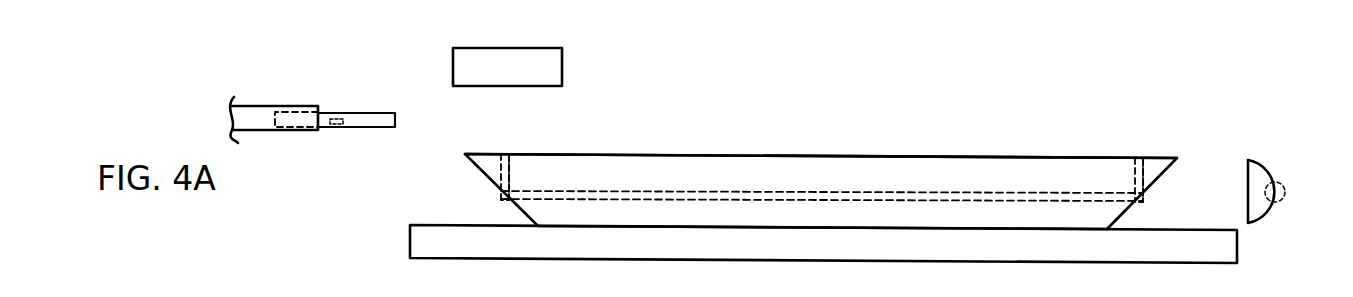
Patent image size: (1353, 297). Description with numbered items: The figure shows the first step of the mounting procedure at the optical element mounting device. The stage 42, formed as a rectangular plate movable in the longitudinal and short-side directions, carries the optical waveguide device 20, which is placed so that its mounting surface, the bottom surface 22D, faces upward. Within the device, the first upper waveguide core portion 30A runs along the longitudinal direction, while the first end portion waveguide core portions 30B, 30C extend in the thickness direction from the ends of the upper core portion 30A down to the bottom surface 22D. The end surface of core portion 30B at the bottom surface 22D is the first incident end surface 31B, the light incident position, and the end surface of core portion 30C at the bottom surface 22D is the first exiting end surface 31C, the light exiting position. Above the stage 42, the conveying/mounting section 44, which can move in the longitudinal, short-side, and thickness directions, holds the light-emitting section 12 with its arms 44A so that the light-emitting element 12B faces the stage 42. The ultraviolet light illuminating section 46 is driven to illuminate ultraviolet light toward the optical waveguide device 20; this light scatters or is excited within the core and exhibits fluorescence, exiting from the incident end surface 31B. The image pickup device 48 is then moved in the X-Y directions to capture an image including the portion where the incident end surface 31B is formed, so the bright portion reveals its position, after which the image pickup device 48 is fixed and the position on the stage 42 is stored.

The light-emitting section 12 is at (369, 110).
The light-emitting element 12B is at (333, 128).
The optical waveguide device 20 is at (1005, 120).
The bottom surface 22D is at (867, 156).
The first upper waveguide core portion 30A is at (727, 190).
The first end portion waveguide core portion 30B is at (512, 172).
The first end portion waveguide core portion 30C is at (1145, 172).
The first incident end surface 31B is at (505, 153).
The first exiting end surface 31C is at (1138, 157).
The stage 42 is at (410, 241).
The conveying/mounting section 44 is at (229, 120).
The arms 44A is at (300, 106).
The ultraviolet light illuminating section 46 is at (1273, 165).
The image pickup device 48 is at (562, 67).